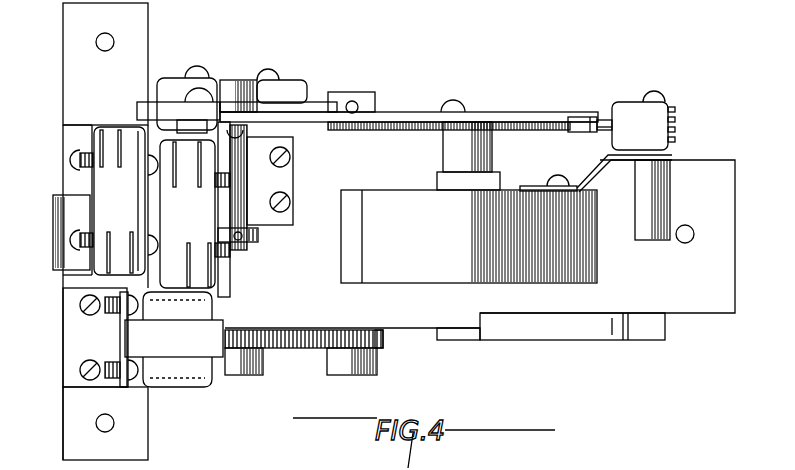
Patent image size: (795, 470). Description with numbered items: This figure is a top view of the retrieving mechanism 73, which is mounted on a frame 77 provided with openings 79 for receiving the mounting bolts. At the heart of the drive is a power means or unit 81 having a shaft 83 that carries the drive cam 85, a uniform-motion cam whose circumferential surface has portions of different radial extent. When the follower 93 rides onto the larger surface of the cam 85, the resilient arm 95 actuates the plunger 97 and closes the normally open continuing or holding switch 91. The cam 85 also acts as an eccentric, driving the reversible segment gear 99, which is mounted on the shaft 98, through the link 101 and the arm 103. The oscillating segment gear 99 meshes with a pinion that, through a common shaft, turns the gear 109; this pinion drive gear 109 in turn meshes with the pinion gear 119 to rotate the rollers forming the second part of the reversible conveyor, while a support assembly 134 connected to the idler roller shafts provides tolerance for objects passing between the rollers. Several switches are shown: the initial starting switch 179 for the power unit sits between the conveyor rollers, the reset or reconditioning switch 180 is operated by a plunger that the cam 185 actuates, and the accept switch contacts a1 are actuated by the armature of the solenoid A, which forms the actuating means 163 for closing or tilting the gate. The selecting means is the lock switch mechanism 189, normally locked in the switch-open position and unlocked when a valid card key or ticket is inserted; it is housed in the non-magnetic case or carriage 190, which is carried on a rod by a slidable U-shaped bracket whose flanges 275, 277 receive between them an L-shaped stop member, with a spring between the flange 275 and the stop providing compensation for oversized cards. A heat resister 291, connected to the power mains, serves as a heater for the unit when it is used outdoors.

The frame 77 is at (150, 22).
The retrieving mechanism 73 is at (60, 392).
The openings 79 is at (100, 47).
The initial starting switch 179 is at (102, 184).
The accept switch contacts a1 is at (204, 275).
The shaft 98 is at (245, 188).
The reversible segment gear 99 is at (138, 100).
The cam 185 is at (190, 97).
The arm 103 is at (218, 117).
The reset or reconditioning switch 180 is at (290, 88).
The support assembly 134 is at (358, 92).
The link 101 is at (402, 114).
The drive cam 85 is at (520, 122).
The follower 93 is at (578, 117).
The resilient arm 95 is at (606, 119).
The plunger 97 is at (606, 132).
The continuing or holding switch 91 is at (628, 103).
The power means or unit 81 is at (372, 196).
The shaft 83 is at (443, 158).
The heat resister 291 is at (673, 202).
The lock switch mechanism 189 is at (571, 325).
The case or carriage 190 is at (612, 330).
The flange 277 is at (628, 335).
The flange 275 is at (481, 335).
The gear 109 is at (294, 350).
The pinion gear 119 is at (385, 340).
The actuating means 163 is at (226, 324).
The solenoid A is at (203, 378).